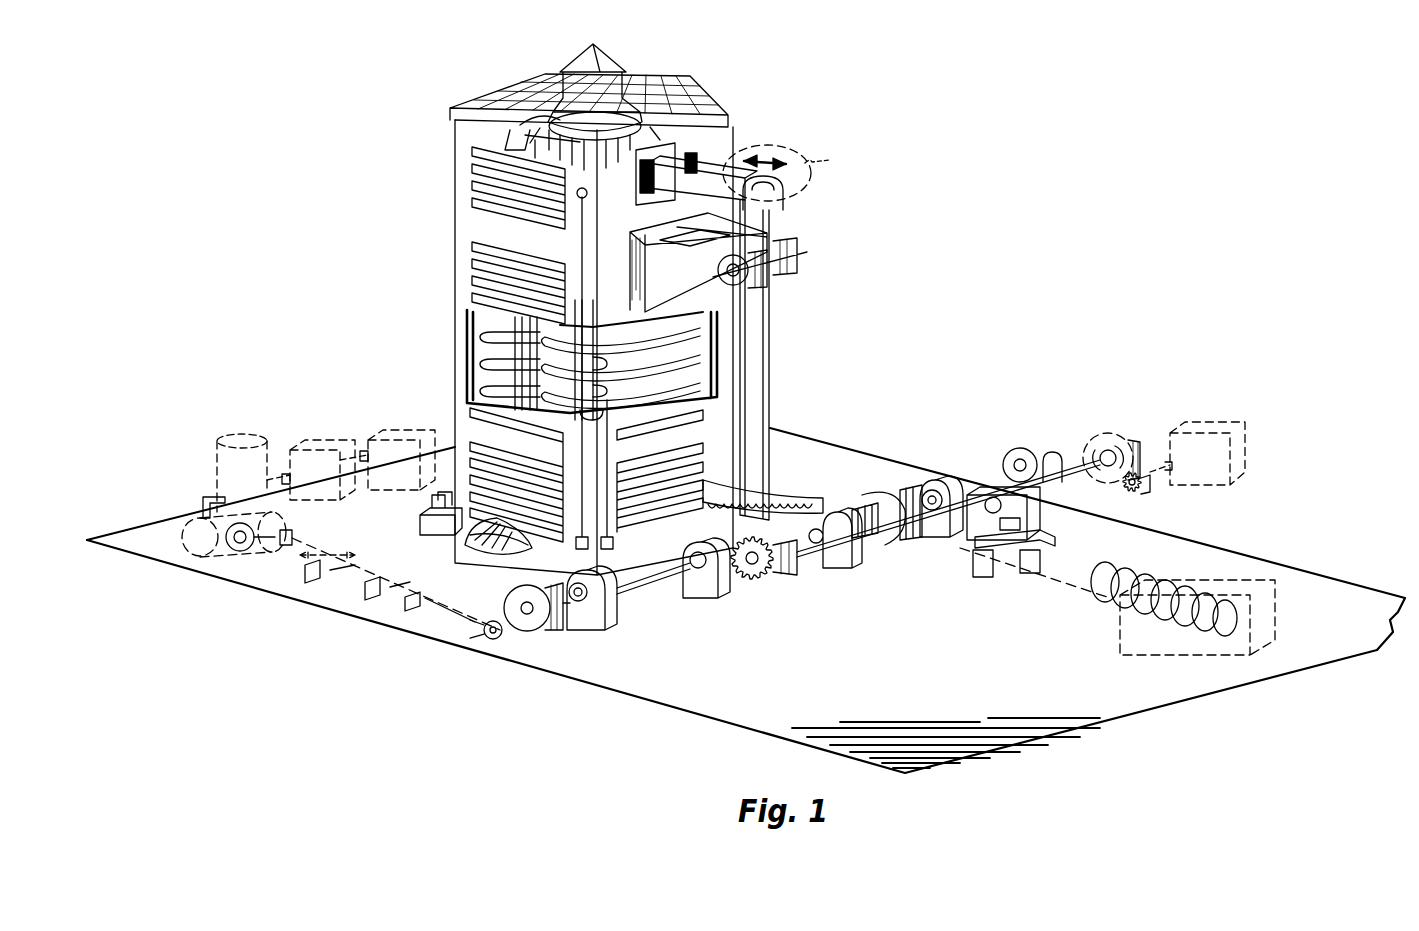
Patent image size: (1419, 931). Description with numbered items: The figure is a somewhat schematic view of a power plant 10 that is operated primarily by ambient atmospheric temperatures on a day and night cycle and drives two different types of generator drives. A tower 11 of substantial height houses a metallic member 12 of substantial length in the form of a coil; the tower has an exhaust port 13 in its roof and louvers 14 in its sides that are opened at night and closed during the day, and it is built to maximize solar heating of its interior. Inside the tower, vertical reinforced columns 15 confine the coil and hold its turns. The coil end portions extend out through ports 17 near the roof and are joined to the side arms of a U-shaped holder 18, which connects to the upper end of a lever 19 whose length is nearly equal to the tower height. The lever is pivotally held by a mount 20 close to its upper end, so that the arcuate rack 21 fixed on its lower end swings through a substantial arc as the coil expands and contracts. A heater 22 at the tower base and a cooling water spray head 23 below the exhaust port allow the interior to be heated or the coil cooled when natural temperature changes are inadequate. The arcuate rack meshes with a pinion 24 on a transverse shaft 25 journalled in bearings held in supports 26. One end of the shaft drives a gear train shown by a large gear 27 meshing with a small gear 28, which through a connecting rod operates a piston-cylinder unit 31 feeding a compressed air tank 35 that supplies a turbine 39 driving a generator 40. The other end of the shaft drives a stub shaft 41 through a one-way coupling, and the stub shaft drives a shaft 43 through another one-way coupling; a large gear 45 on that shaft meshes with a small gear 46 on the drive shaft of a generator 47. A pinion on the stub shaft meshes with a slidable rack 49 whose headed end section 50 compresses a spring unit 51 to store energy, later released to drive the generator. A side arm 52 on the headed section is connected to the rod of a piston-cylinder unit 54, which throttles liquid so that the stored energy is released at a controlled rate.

The power plant 10 is at (448, 177).
The tower 11 is at (455, 230).
The metallic member 12 is at (490, 338).
The exhaust port 13 is at (565, 85).
The louvers 14 is at (470, 154).
The columns 15 is at (700, 348).
The ports 17 is at (660, 163).
The U-shaped holder 18 is at (718, 180).
The lever 19 is at (752, 405).
The mount 20 is at (695, 288).
The arcuate rack 21 is at (722, 502).
The heater 22 is at (435, 540).
The cooling water spray head 23 is at (600, 110).
The pinion 24 is at (765, 568).
The transverse shaft 25 is at (665, 580).
The supports 26 is at (610, 615).
The large gear 27 is at (538, 632).
The small gear 28 is at (495, 636).
The piston-cylinder unit 31 is at (195, 548).
The compressed air tank 35 is at (212, 478).
The turbine 39 is at (310, 445).
The generator 40 is at (396, 430).
The stub shaft 41 is at (882, 545).
The shaft 43 is at (1070, 468).
The large gear 45 is at (1125, 438).
The small gear 46 is at (1133, 488).
The generator 47 is at (1205, 420).
The slidable rack 49 is at (920, 545).
The headed end section 50 is at (1040, 582).
The spring unit 51 is at (1150, 622).
The side arm 52 is at (1110, 556).
The piston-cylinder unit 54 is at (958, 530).